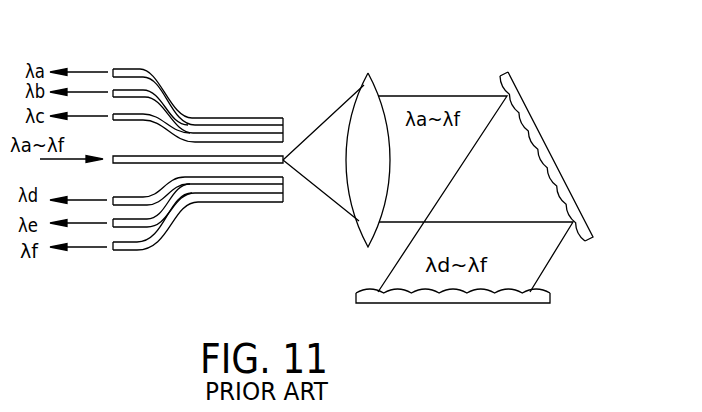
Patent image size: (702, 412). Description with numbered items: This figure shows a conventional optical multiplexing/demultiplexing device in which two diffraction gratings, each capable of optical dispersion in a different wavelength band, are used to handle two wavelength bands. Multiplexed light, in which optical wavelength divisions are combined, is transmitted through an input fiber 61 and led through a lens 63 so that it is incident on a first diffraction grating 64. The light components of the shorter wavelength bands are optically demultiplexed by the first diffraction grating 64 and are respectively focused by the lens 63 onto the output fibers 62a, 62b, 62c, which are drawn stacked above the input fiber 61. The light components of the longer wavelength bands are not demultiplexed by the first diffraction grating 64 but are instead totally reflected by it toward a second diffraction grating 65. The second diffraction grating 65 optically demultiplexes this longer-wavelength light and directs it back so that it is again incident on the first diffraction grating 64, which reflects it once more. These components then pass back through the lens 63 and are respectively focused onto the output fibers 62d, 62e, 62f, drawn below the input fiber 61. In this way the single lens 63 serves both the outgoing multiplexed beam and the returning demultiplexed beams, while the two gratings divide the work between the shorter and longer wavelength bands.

The input fiber 61 is at (123, 158).
The output fiber 62a is at (143, 74).
The output fiber 62b is at (155, 108).
The output fiber 62c is at (188, 125).
The output fiber 62d is at (170, 194).
The output fiber 62e is at (152, 218).
The output fiber 62f is at (141, 246).
The lens 63 is at (376, 87).
The first diffraction grating 64 is at (532, 120).
The second diffraction grating 65 is at (522, 304).